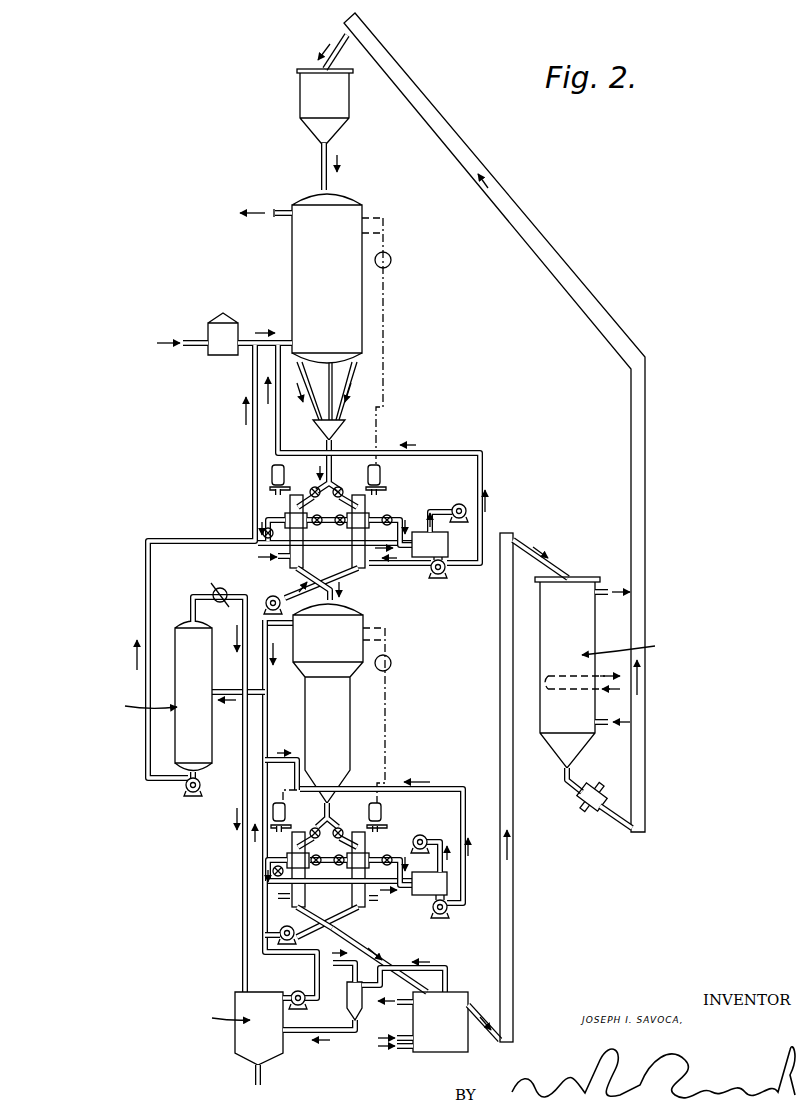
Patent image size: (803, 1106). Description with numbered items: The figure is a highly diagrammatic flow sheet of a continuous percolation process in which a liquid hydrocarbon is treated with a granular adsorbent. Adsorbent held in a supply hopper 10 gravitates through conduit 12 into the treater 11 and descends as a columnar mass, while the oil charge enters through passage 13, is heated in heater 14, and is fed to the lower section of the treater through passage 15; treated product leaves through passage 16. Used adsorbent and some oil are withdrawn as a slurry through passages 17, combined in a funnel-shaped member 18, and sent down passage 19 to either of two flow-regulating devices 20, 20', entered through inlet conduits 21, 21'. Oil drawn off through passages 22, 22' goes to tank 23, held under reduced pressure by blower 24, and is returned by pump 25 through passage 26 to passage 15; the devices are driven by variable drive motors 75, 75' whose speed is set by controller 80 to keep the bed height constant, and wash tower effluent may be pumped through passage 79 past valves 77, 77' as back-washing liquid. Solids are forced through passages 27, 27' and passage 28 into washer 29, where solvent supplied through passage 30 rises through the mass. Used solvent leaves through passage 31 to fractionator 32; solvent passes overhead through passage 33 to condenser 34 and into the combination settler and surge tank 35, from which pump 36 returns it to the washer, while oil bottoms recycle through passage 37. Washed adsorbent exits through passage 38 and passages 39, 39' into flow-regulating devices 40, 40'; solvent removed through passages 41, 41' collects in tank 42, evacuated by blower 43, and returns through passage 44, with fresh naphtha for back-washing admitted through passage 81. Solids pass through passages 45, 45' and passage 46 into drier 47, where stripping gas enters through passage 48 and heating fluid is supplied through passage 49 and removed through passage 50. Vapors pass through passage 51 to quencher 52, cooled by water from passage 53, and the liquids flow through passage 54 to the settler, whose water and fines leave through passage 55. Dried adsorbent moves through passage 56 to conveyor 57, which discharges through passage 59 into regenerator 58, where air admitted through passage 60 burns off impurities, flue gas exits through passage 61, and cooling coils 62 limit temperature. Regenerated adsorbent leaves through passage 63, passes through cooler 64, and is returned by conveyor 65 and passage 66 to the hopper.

The supply hopper 10 is at (308, 97).
The treater 11 is at (298, 278).
The conduit 12 is at (320, 167).
The passage 13 is at (196, 348).
The heater 14 is at (213, 322).
The passage 15 is at (286, 338).
The passage 16 is at (277, 218).
The passages 17 is at (338, 372).
The funnel-shaped member 18 is at (322, 432).
The passage 19 is at (332, 447).
The flow-regulating device 20 is at (340, 536).
The flow-regulating device 20' is at (376, 536).
The inlet conduit 21 is at (326, 485).
The inlet conduit 21' is at (349, 480).
The passage 22 is at (253, 528).
The passage 22' is at (398, 524).
The tank 23 is at (432, 542).
The blower 24 is at (463, 503).
The pump 25 is at (438, 578).
The passage 26 is at (473, 447).
The passage 27 is at (321, 585).
The passage 27' is at (337, 584).
The passage 28 is at (344, 602).
The washer 29 is at (310, 724).
The passage 30 is at (288, 745).
The passage 31 is at (267, 692).
The fractionator 32 is at (178, 737).
The passage 33 is at (190, 597).
The condenser 34 is at (222, 582).
The combination settler and surge tank 35 is at (240, 1044).
The pump 36 is at (306, 1001).
The passage 37 is at (176, 535).
The passage 38 is at (333, 800).
The passage 39 is at (323, 824).
The passage 39' is at (360, 819).
The flow-regulating device 40 is at (322, 869).
The flow-regulating device 40' is at (373, 877).
The passage 41 is at (311, 867).
The passage 41' is at (390, 862).
The tank 42 is at (437, 913).
The blower 43 is at (425, 836).
The passage 44 is at (466, 789).
The passage 45 is at (314, 922).
The passage 45' is at (332, 921).
The passage 46 is at (384, 967).
The drier 47 is at (455, 1053).
The passage 48 is at (410, 1049).
The passage 49 is at (396, 1048).
The passage 50 is at (395, 1013).
The passage 51 is at (448, 976).
The quencher 52 is at (362, 1024).
The passage 53 is at (352, 972).
The passage 54 is at (306, 1036).
The passage 55 is at (255, 1082).
The passage 56 is at (486, 1042).
The conveyor 57 is at (514, 906).
The regenerator 58 is at (634, 672).
The passage 59 is at (572, 572).
The passage 60 is at (610, 725).
The passage 61 is at (612, 590).
The cooling coils 62 is at (637, 695).
The passage 63 is at (572, 786).
The cooler 64 is at (590, 810).
The conveyor 65 is at (646, 458).
The passage 66 is at (345, 34).
The variable drive motor 75 is at (299, 480).
The variable drive motor 75' is at (392, 476).
The valve 77 is at (327, 511).
The valve 77' is at (365, 509).
The passage 79 is at (268, 596).
The controller 80 is at (391, 260).
The passage 81 is at (292, 940).